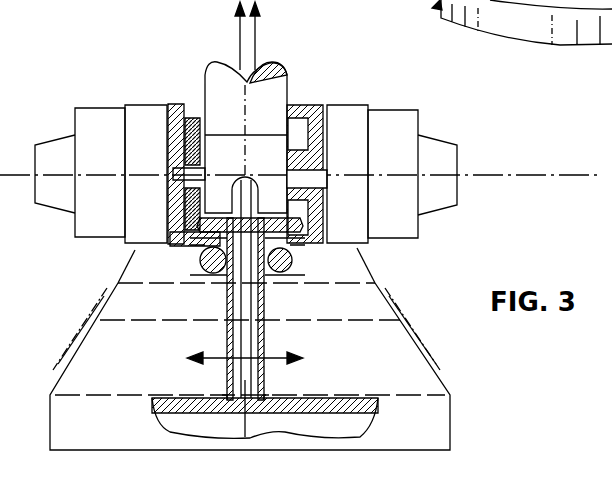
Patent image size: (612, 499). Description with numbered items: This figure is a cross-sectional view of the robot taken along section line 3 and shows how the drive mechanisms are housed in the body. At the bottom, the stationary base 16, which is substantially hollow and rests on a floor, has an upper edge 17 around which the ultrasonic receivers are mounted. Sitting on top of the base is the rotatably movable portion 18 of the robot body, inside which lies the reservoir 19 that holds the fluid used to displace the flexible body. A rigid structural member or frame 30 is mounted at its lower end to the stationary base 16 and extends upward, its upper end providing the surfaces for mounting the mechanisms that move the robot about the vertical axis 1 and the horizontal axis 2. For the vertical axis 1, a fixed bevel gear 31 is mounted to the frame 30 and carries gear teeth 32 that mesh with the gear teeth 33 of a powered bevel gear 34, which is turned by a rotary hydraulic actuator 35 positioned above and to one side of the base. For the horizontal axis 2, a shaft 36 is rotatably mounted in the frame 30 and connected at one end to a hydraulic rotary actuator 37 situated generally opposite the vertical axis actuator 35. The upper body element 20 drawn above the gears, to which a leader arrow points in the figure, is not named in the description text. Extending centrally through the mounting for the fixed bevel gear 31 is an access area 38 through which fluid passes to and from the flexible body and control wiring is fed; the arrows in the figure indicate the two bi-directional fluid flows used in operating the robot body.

The vertical axis 1 is at (146, 174).
The horizontal axis 2 is at (347, 174).
The section line 3 is at (246, 119).
The stationary base 16 is at (450, 423).
The upper edge 17 is at (118, 283).
The rotatably movable portion 18 is at (376, 272).
The reservoir 19 is at (168, 355).
The barrel 20 is at (287, 97).
The frame 30 is at (321, 108).
The fixed bevel gear 31 is at (330, 283).
The gear teeth 32 is at (190, 220).
The gear teeth 33 is at (198, 130).
The powered bevel gear 34 is at (176, 128).
The rotary hydraulic actuator 35 is at (87, 120).
The shaft 36 is at (322, 172).
The hydraulic rotary actuator 37 is at (403, 137).
The access area 38 is at (255, 300).